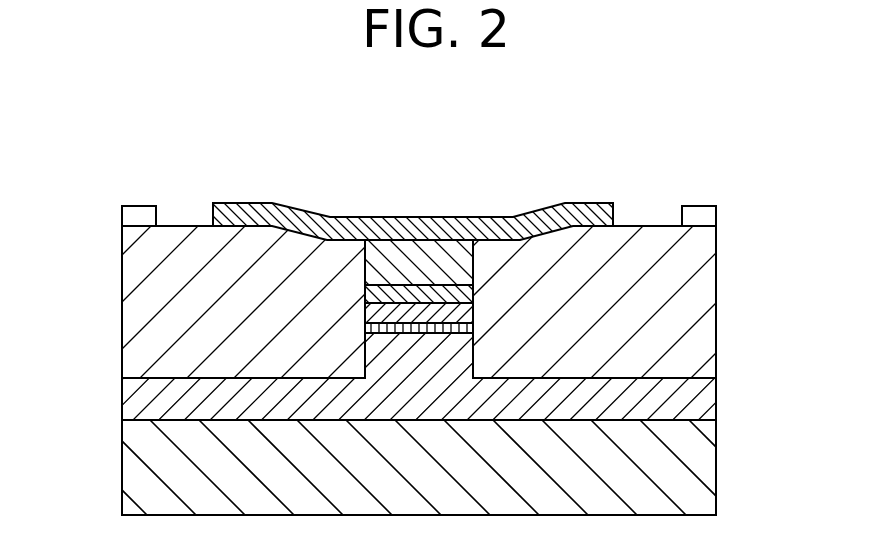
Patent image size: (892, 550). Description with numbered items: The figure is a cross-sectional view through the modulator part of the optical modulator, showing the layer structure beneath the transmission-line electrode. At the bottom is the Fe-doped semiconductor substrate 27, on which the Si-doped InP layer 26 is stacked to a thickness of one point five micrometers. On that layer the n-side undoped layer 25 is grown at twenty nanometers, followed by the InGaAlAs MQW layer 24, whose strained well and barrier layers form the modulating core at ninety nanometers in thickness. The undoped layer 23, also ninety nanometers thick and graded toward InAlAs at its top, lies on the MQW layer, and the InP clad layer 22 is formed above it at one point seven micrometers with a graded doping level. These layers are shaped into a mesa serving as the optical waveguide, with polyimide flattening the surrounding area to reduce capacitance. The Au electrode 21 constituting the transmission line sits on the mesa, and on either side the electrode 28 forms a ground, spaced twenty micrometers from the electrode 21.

The electrode 21 is at (615, 210).
The InP clad layer 22 is at (447, 267).
The undoped layer 23 is at (450, 297).
The MQW layer 24 is at (443, 315).
The n-side undoped layer 25 is at (388, 331).
The InP layer 26 is at (382, 379).
The semiconductor substrate 27 is at (667, 470).
The electrode for forming a ground 28 is at (122, 212).